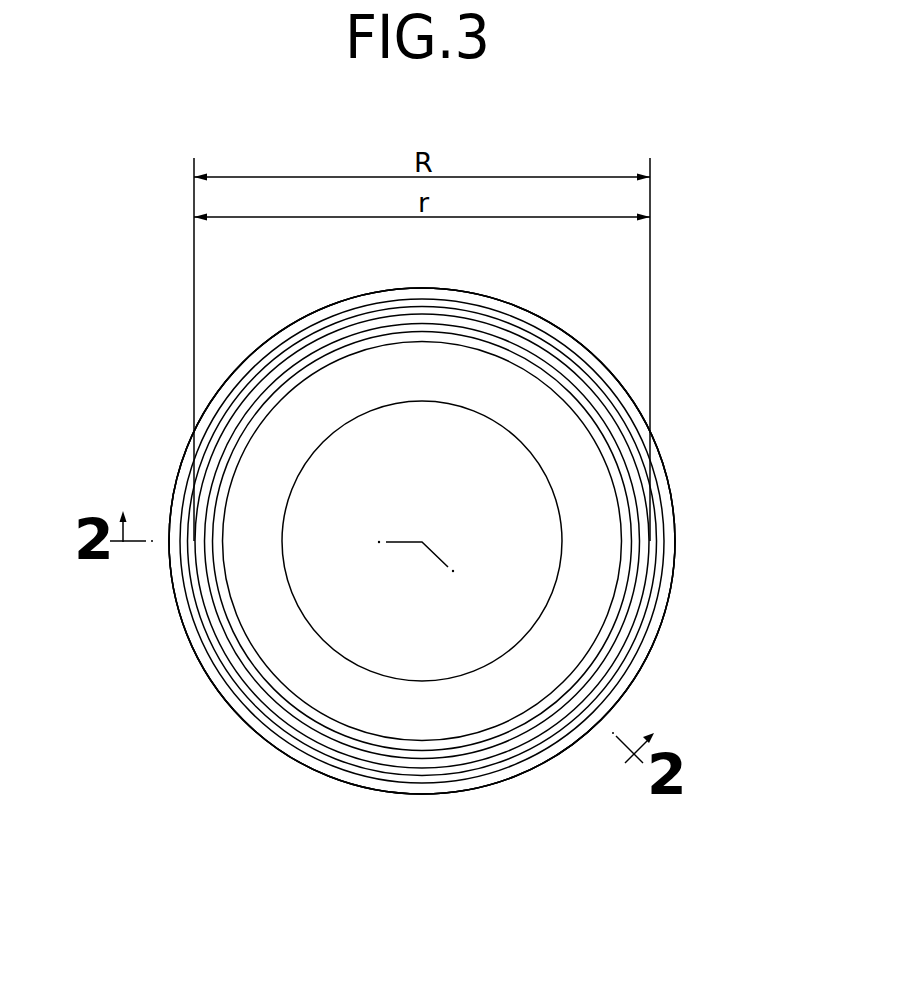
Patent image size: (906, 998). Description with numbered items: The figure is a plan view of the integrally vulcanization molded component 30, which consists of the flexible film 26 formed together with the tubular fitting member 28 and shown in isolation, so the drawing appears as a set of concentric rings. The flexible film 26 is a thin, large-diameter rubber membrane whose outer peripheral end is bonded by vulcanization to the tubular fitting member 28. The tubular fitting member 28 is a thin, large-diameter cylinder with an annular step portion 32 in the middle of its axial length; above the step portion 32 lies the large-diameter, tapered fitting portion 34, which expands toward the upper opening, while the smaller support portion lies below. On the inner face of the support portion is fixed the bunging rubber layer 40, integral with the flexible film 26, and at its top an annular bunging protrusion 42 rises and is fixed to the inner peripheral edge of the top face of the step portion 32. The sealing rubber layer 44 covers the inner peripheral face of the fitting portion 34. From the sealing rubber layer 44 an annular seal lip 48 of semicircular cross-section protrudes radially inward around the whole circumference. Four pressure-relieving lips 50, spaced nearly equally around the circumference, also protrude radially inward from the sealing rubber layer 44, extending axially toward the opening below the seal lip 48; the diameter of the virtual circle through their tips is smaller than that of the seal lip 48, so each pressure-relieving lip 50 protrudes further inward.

The flexible film 26 is at (355, 608).
The tubular fitting member 28 is at (682, 491).
The integrally vulcanization molded component 30 is at (694, 375).
The step portion 32 is at (508, 745).
The fitting portion 34 is at (560, 336).
The bunging rubber layer 40 is at (622, 587).
The bunging protrusion 42 is at (617, 635).
The sealing rubber layer 44 is at (292, 340).
The seal lip 48 is at (368, 316).
The pressure-relieving lip 50 is at (424, 313).